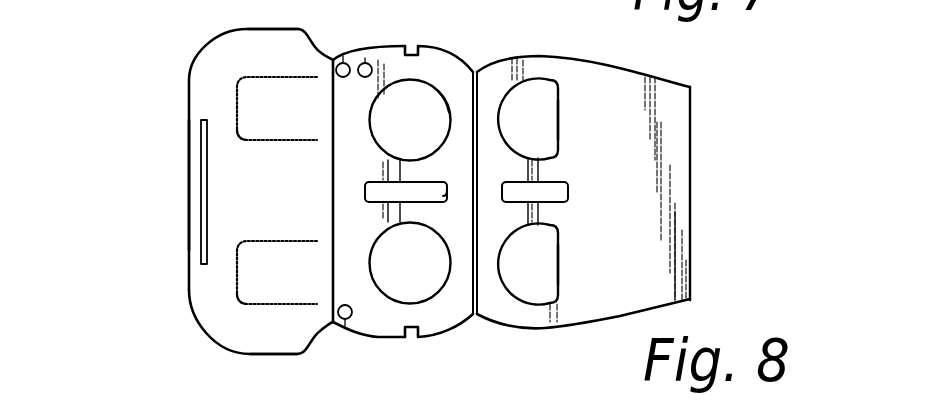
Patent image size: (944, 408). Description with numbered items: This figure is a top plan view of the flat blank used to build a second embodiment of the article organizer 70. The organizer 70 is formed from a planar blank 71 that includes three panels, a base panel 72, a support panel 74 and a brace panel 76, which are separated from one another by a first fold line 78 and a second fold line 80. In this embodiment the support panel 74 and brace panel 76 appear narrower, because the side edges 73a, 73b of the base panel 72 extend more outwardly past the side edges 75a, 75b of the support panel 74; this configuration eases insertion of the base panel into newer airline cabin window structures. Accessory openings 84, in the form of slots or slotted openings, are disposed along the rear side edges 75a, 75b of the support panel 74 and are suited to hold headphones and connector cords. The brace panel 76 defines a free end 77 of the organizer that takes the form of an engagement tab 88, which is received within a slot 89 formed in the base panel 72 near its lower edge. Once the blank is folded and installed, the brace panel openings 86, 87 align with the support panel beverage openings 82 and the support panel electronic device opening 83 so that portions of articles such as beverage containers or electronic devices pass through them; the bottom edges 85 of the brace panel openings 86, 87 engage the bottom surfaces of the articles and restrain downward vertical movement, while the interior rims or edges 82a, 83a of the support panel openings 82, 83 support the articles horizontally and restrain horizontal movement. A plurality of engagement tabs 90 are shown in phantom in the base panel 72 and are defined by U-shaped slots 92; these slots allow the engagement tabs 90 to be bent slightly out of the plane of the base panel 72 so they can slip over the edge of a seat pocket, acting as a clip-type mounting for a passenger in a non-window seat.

The article organizer 70 is at (190, 78).
The planar blank 71 is at (243, 183).
The base panel 72 is at (303, 209).
The base panel side edge 73a is at (249, 33).
The base panel side edge 73b is at (257, 353).
The support panel 74 is at (368, 236).
The support panel side edge 75a is at (441, 47).
The support panel side edge 75b is at (435, 337).
The brace panel 76 is at (645, 249).
The free end 77 is at (690, 161).
The first fold line 78 is at (343, 323).
The second fold line 80 is at (473, 316).
The support panel beverage opening 82 is at (423, 137).
The interior rim of beverage opening 82a is at (440, 108).
The support panel electronic device opening 83 is at (403, 187).
The interior rim of electronic device opening 83a is at (430, 198).
The accessory openings 84 is at (365, 62).
The bottom edges of brace panel openings 85 is at (559, 128).
The brace panel opening 86 is at (545, 137).
The brace panel opening 87 is at (553, 185).
The engagement tab 88 is at (675, 212).
The slot 89 is at (200, 221).
The engagement tabs 90 is at (263, 102).
The U-shaped slots 92 is at (238, 138).